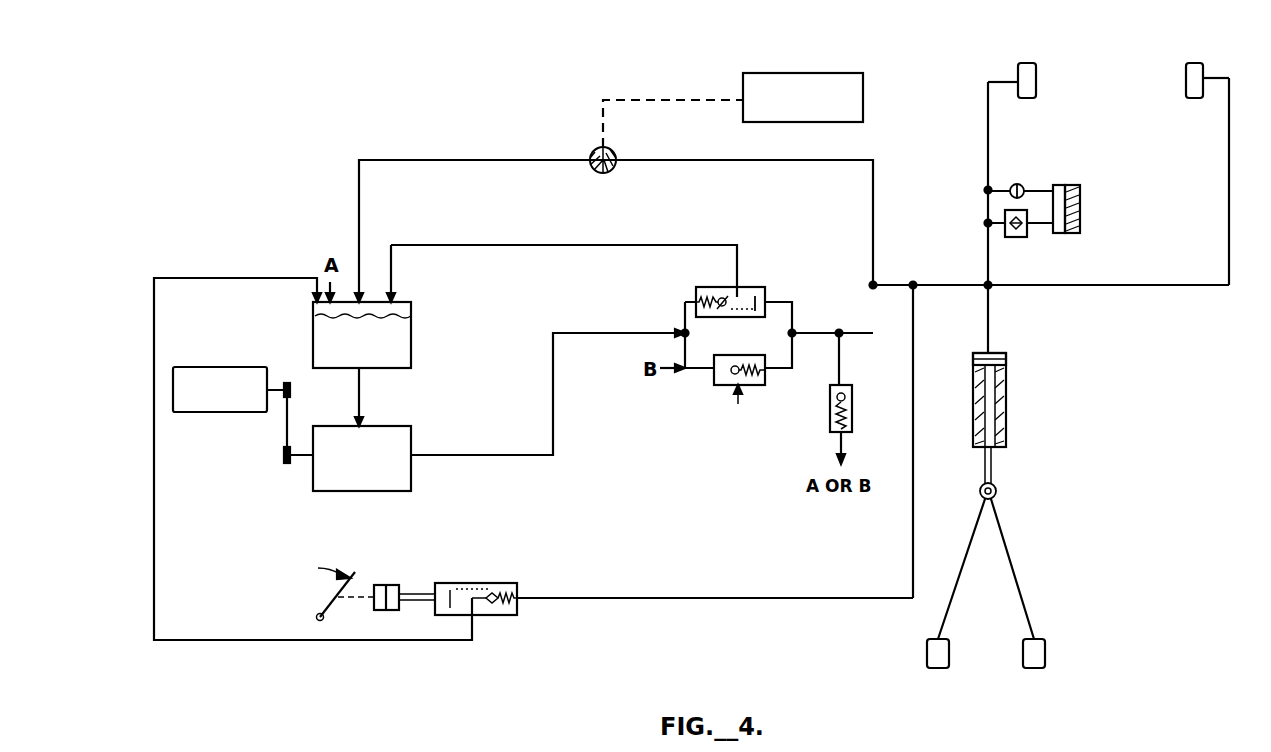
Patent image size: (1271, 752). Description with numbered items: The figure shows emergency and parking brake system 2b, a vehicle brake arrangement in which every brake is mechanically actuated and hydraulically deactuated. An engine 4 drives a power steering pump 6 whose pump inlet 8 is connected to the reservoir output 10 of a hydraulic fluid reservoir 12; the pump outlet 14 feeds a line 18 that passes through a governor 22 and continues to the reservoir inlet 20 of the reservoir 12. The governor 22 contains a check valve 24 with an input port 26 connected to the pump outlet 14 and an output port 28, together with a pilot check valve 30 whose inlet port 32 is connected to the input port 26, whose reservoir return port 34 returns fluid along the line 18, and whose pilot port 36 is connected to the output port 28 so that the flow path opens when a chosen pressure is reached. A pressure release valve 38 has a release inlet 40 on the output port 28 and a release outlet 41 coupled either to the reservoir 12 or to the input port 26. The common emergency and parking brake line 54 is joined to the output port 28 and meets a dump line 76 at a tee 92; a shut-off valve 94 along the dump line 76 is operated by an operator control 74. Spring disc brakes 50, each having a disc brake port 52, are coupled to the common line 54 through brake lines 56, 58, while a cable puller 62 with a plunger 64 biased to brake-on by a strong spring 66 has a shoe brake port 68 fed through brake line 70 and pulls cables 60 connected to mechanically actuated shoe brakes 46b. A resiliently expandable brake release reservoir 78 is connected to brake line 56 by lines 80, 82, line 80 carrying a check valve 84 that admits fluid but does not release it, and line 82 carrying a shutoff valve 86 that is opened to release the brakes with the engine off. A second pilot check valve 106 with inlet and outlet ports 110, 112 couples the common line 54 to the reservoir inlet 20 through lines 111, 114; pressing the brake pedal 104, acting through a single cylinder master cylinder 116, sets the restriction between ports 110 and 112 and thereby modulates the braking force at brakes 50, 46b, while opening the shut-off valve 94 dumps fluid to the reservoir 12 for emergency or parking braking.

The emergency and parking brake start system 2b is at (372, 100).
The engine 4 is at (248, 368).
The power steering pump 6 is at (395, 425).
The pump inlet 8 is at (363, 425).
The reservoir output 10 is at (361, 376).
The hydraulic fluid reservoir 12 is at (413, 330).
The pump outlet 14 is at (413, 452).
The line 18 is at (553, 440).
The reservoir inlet 20 is at (383, 300).
The governor 22 is at (615, 375).
The check valve 24 is at (735, 401).
The input port 26 is at (713, 380).
The output port 28 is at (766, 380).
The pilot check valve 30 is at (718, 284).
The inlet port 32 is at (683, 320).
The reservoir return port 34 is at (740, 290).
The pilot port 36 is at (766, 302).
The pressure release valve 38 is at (853, 388).
The release inlet 40 is at (848, 382).
The release outlet 41 is at (845, 438).
The mechanically actuated shoe brakes 46b is at (1030, 654).
The spring disc brakes 50 is at (1028, 66).
The disc brake port 52 is at (1014, 81).
The common emergency and parking brake line 54 is at (920, 283).
The E&P brake line 56 is at (990, 147).
The E&P brake line 58 is at (1231, 206).
The cables 60 is at (1002, 585).
The cable puller 62 is at (1008, 412).
The plunger 64 is at (1008, 367).
The strong spring 66 is at (1008, 440).
The shoe brake port 68 is at (992, 352).
The E&P brake line 70 is at (992, 323).
The operator control 74 is at (855, 73).
The dump line 76 is at (875, 215).
The brake release reservoir 78 is at (1075, 184).
The line 80 is at (1035, 234).
The line 82 is at (1036, 187).
The check valve 84 is at (1005, 237).
The shutoff valve 86 is at (1020, 178).
The tee 92 is at (871, 282).
The shut-off valve 94 is at (608, 150).
The brake pedal 104 is at (350, 584).
The second pilot check valve 106 is at (470, 583).
The inlet port 110 is at (520, 596).
The line 111 is at (604, 597).
The outlet port 112 is at (475, 620).
The line 114 is at (157, 585).
The single cylinder master cylinder 116 is at (395, 583).